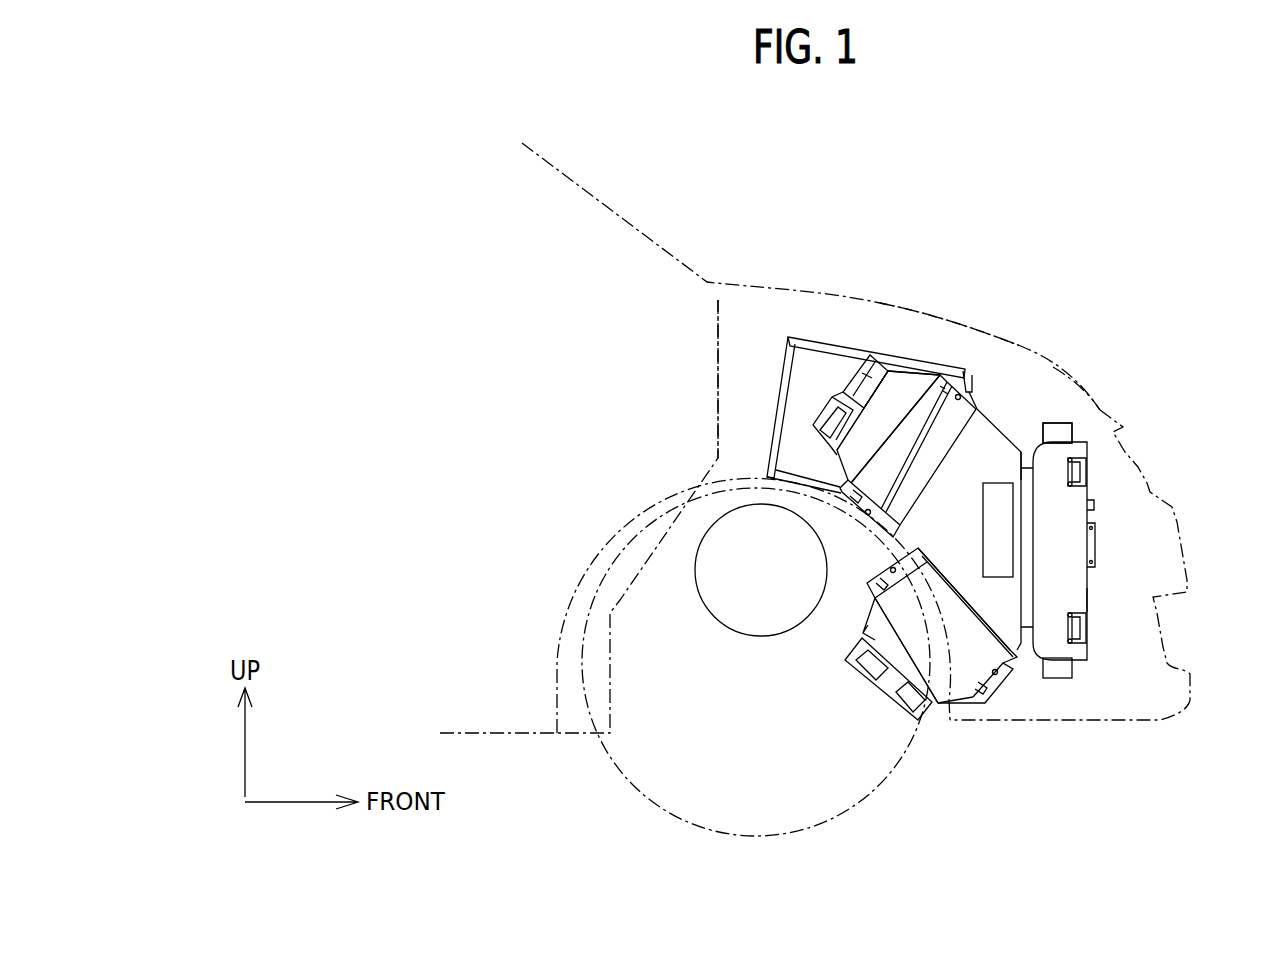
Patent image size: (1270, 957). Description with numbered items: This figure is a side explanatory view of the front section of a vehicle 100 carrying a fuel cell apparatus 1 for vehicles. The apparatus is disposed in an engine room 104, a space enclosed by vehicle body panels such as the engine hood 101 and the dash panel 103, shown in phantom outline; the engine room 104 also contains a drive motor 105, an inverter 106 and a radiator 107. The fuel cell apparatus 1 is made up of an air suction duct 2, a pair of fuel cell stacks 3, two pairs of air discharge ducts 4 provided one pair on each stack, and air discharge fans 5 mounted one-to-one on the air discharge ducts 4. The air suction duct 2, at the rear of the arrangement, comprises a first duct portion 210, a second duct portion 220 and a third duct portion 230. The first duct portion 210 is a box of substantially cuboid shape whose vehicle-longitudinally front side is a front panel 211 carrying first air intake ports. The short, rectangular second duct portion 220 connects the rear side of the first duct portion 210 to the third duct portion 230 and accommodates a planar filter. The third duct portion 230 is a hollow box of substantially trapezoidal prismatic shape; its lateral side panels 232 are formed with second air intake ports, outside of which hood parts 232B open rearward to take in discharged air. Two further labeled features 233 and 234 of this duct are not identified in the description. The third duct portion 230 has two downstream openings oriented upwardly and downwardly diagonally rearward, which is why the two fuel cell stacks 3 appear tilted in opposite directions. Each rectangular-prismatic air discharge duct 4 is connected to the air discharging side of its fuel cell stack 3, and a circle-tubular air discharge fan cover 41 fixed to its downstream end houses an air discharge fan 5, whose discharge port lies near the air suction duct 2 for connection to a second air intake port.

The vehicle 100 is at (635, 160).
The engine hood 101 is at (932, 312).
The dash panel 103 is at (717, 428).
The engine room 104 is at (777, 330).
The drive motor 105 is at (694, 578).
The inverter 106 is at (832, 345).
The radiator 107 is at (1097, 420).
The fuel cell apparatus for vehicles 1 is at (1046, 376).
The air suction duct 2 is at (1092, 430).
The fuel cell stack 3 is at (978, 380).
The air discharge duct 4 is at (921, 358).
The air discharge fan cover 41 is at (878, 350).
The air discharge fan 5 is at (826, 393).
The first duct portion 210 is at (1104, 496).
The front panel 211 is at (1090, 498).
The second duct portion 220 is at (1052, 423).
The third duct portion 230 is at (1010, 418).
The lateral side panel 232 is at (1088, 590).
The hood part 232B is at (1092, 532).
The side wall 233 is at (1035, 437).
The bottom wall 234 is at (974, 708).